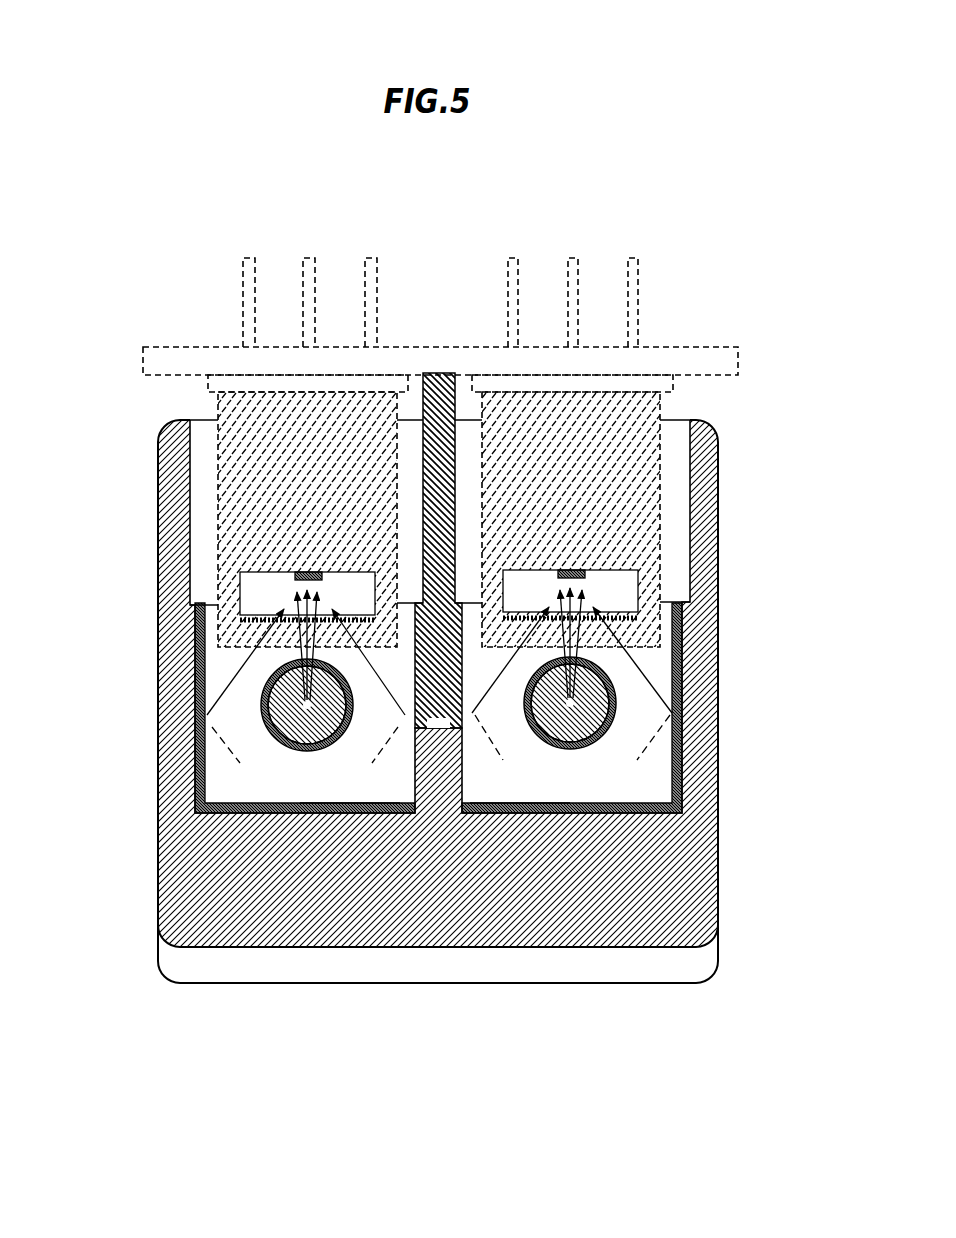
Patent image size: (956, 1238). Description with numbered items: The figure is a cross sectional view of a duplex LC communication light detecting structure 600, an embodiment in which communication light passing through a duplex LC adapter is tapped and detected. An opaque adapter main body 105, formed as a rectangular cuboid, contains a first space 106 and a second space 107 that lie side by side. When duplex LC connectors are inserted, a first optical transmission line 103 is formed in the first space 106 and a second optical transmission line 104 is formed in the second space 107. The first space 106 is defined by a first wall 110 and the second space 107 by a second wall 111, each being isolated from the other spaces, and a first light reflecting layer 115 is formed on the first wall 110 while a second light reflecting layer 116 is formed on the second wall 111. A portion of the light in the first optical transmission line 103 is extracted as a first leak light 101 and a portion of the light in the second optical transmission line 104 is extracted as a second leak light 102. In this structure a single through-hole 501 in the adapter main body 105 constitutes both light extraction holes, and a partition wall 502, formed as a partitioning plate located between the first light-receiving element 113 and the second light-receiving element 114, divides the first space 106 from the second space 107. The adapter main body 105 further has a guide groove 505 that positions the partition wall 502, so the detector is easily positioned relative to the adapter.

The duplex LC communication light detecting structure 600 is at (132, 288).
The single through-hole 501 is at (200, 435).
The partition wall 502 is at (420, 400).
The guide groove 505 is at (436, 728).
The first light-receiving element 113 is at (292, 583).
The second light-receiving element 114 is at (608, 580).
The first leak light 101 is at (255, 637).
The second leak light 102 is at (618, 660).
The first optical transmission line 103 is at (300, 740).
The second optical transmission line 104 is at (565, 735).
The adapter main body 105 is at (717, 866).
The first space 106 is at (207, 746).
The second space 107 is at (672, 742).
The first wall 110 is at (222, 803).
The second wall 111 is at (660, 803).
The first light reflecting layer 115 is at (380, 808).
The second light reflecting layer 116 is at (483, 808).